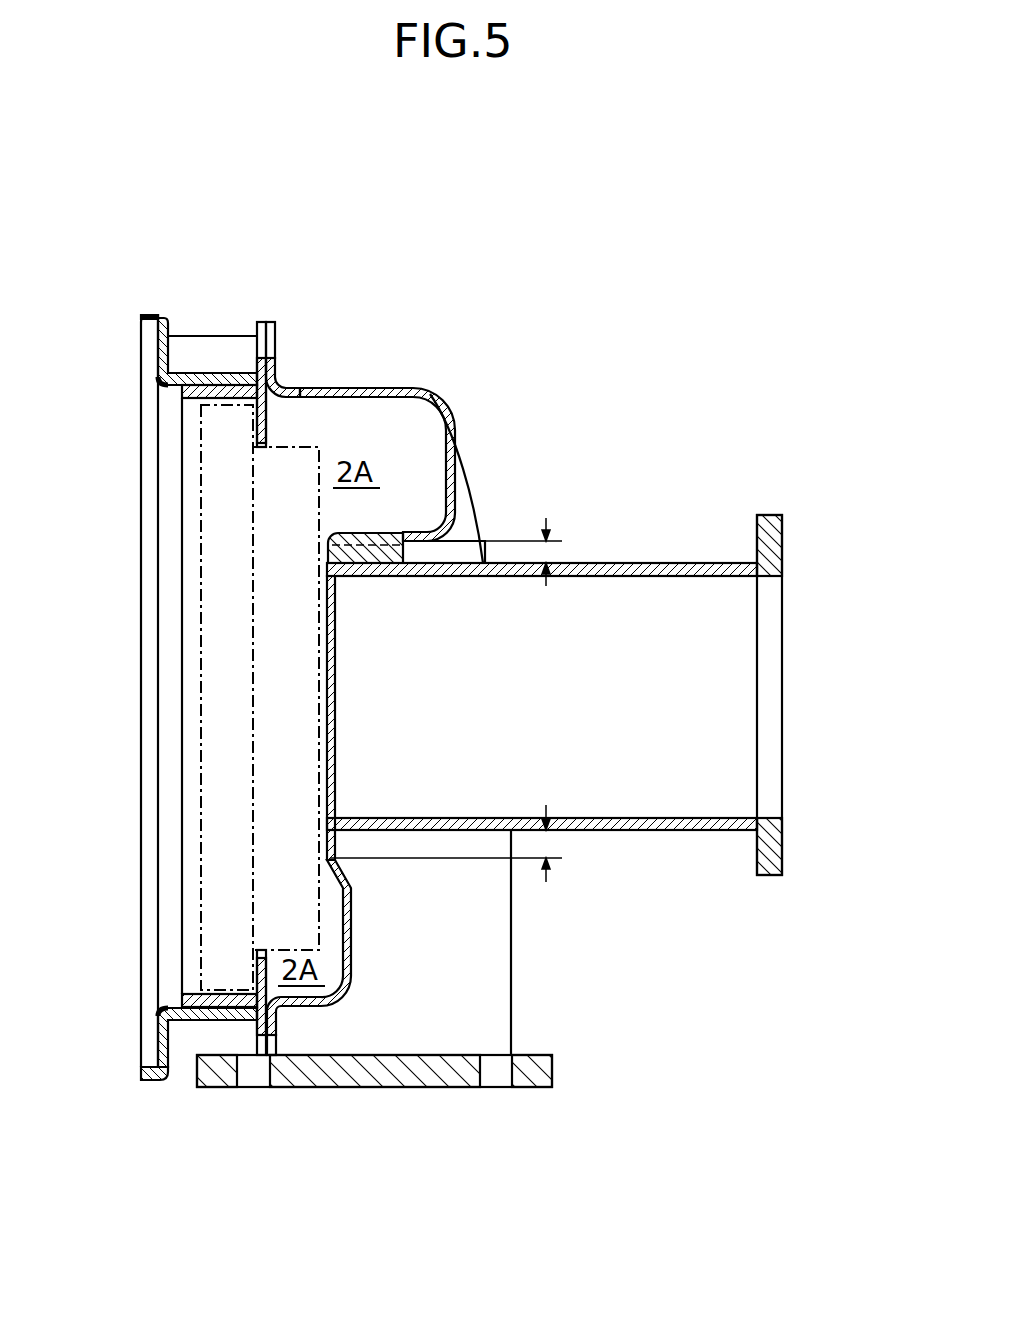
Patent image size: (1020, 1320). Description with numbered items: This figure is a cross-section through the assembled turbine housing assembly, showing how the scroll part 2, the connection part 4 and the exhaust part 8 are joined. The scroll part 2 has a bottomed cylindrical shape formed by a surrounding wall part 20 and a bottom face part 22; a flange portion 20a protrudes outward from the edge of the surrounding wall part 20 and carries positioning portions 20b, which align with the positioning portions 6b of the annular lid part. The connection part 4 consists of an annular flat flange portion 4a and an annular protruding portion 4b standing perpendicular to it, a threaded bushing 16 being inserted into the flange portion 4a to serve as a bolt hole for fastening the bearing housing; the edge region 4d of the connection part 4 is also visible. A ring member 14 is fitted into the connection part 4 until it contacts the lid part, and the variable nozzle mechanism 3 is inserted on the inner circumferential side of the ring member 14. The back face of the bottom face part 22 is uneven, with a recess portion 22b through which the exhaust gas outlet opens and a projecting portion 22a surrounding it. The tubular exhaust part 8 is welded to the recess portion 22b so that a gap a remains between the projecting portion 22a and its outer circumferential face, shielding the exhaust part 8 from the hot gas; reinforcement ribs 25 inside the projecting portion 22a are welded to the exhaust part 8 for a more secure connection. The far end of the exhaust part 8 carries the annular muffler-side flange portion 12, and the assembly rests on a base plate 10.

The scroll part 2 is at (450, 359).
The variable nozzle mechanism 3 is at (202, 666).
The connection part 4 is at (139, 316).
The flange portion 4a is at (170, 1042).
The protruding portion 4b is at (218, 1018).
The bent portion 4d is at (138, 1080).
The positioning portion 6b is at (257, 330).
The exhaust part 8 is at (683, 543).
The base plate 10 is at (316, 1080).
The muffler-side flange portion 12 is at (770, 515).
The ring member 14 is at (208, 412).
The threaded bushing 16 is at (187, 350).
The surrounding wall part 20 is at (350, 388).
The flange portion 20a is at (276, 378).
The positioning portion 20b is at (277, 330).
The bottom face part 22 is at (457, 465).
The projecting portion 22a is at (350, 943).
The recess portion 22b is at (336, 846).
The reinforcement rib 25 is at (376, 546).
The gap a is at (548, 552).